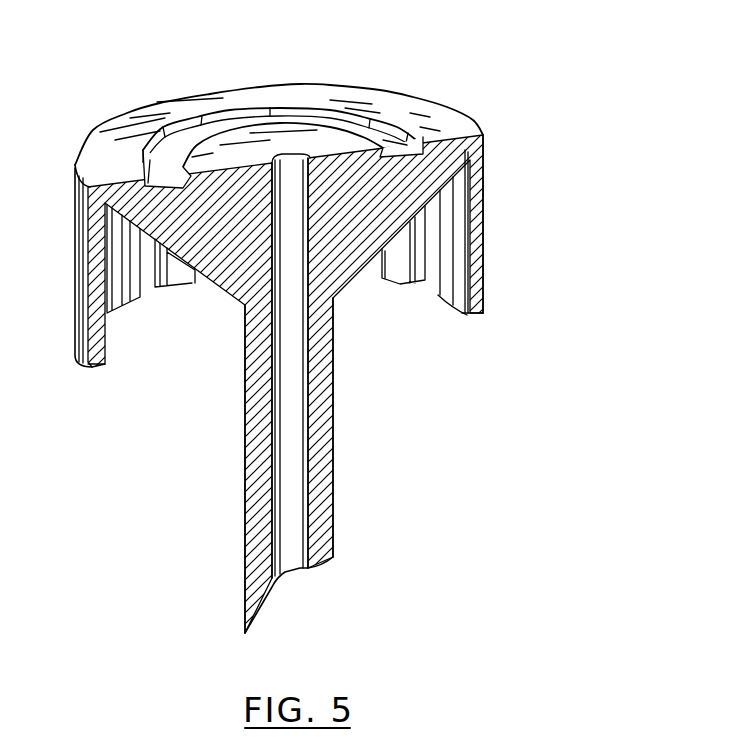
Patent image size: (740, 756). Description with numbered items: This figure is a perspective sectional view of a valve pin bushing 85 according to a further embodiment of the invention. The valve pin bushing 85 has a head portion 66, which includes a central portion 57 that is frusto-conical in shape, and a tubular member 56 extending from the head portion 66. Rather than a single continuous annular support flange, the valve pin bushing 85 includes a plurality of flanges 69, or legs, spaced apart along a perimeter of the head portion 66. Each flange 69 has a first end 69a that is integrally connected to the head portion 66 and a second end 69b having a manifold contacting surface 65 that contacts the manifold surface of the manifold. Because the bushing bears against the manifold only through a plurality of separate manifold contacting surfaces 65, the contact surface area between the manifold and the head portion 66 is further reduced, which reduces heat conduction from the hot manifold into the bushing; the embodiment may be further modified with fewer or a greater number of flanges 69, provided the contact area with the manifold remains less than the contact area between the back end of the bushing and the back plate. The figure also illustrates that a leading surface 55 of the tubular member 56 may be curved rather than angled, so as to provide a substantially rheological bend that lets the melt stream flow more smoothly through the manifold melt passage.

The valve pin bushing 85 is at (451, 93).
The head portion 66 is at (587, 127).
The first end 69a is at (482, 172).
The flange 69 is at (482, 228).
The second end 69b is at (482, 302).
The manifold contacting surface 65 is at (471, 316).
The central portion 57 is at (165, 285).
The tubular member 56 is at (322, 440).
The leading surface 55 is at (262, 603).